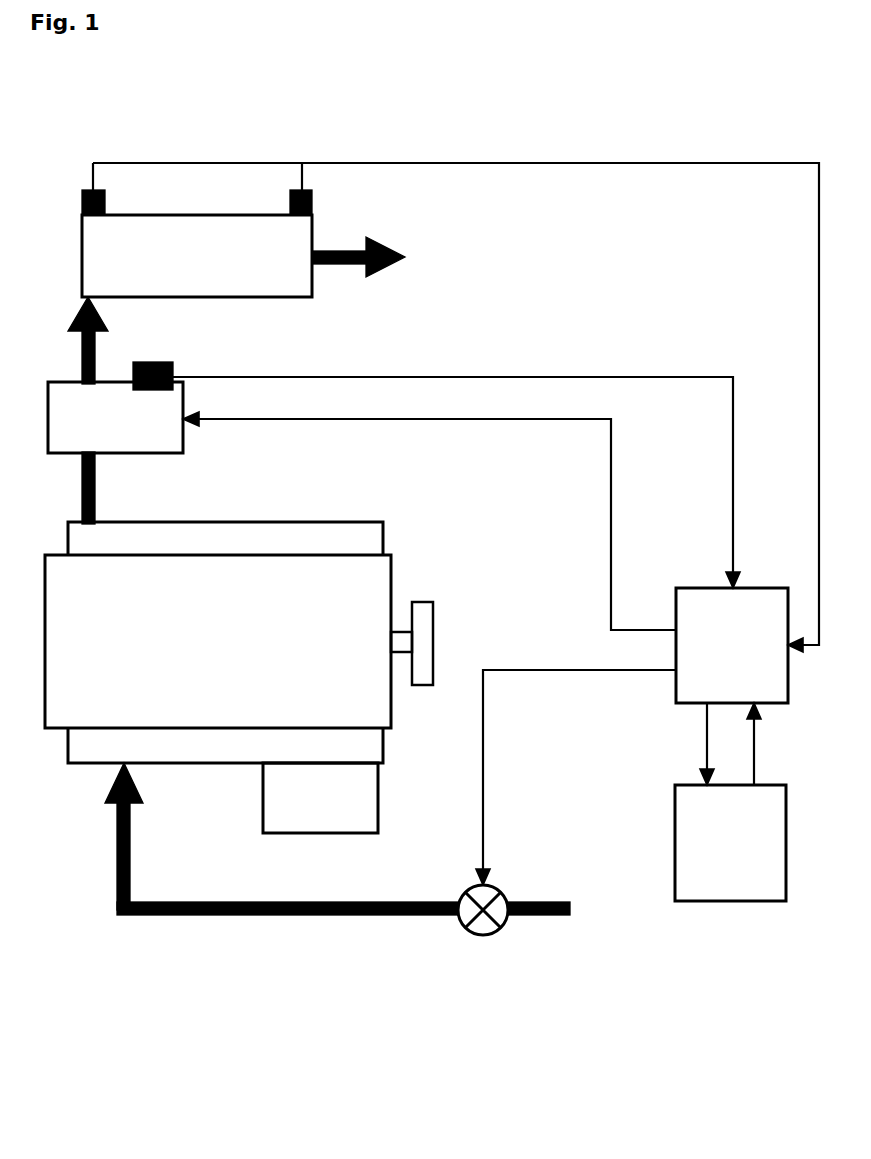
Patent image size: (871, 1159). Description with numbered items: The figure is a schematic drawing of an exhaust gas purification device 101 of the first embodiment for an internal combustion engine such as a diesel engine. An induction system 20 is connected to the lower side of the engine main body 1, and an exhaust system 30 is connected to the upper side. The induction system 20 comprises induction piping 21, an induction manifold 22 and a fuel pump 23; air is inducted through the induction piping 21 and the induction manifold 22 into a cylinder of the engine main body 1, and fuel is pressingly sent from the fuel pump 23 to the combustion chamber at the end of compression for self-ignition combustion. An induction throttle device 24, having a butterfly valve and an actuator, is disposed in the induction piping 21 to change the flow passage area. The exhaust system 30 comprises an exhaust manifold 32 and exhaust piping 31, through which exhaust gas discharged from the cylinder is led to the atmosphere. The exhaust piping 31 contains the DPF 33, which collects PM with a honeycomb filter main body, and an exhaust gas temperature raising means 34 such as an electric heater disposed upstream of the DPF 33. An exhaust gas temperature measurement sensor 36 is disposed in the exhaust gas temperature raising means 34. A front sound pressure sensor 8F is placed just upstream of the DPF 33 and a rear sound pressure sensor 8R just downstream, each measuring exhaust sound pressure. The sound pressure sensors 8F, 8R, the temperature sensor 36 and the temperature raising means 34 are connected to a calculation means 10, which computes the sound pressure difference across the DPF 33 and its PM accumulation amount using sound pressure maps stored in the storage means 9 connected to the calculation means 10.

The exhaust gas purification device 101 is at (618, 114).
The exhaust system 30 is at (50, 181).
The front sound pressure sensor 8F is at (82, 205).
The rear sound pressure sensor 8R is at (312, 206).
The DPF 33 is at (207, 275).
The exhaust piping 31 is at (338, 263).
The exhaust gas temperature measurement sensor 36 is at (152, 362).
The exhaust gas temperature raising means 34 is at (124, 438).
The exhaust manifold 32 is at (325, 522).
The engine main body 1 is at (229, 665).
The calculation means 10 is at (742, 665).
The storage means 9 is at (742, 863).
The induction system 20 is at (179, 983).
The induction piping 21 is at (239, 915).
The induction manifold 22 is at (225, 763).
The fuel pump 23 is at (330, 818).
The induction throttle device 24 is at (466, 893).